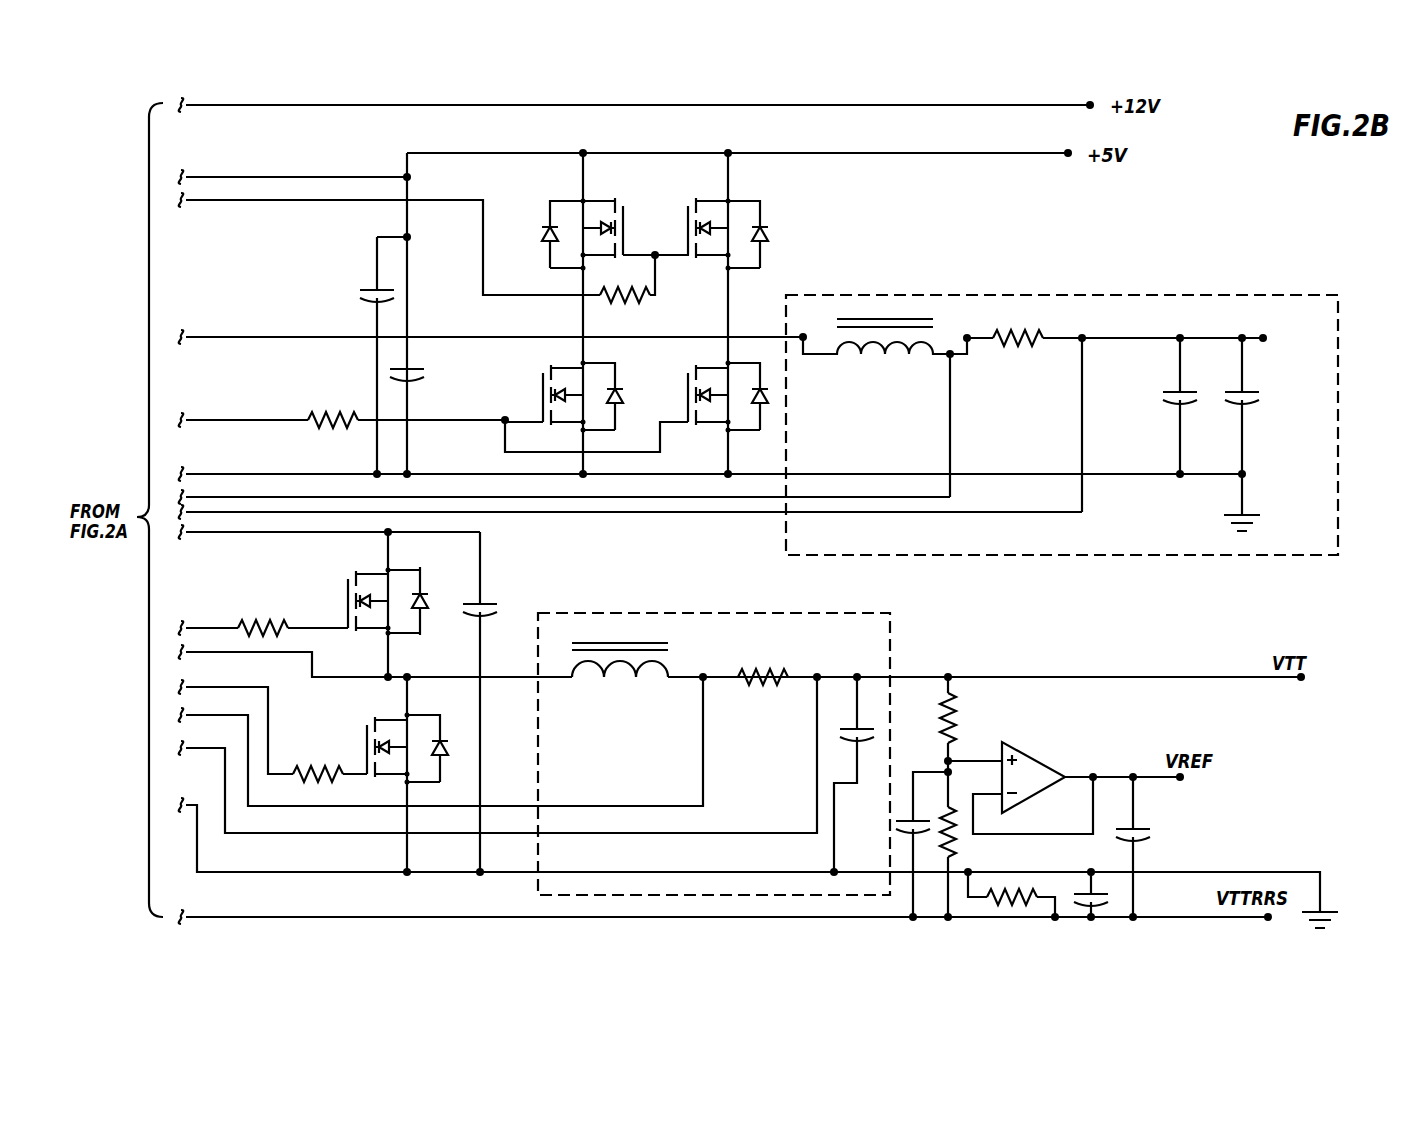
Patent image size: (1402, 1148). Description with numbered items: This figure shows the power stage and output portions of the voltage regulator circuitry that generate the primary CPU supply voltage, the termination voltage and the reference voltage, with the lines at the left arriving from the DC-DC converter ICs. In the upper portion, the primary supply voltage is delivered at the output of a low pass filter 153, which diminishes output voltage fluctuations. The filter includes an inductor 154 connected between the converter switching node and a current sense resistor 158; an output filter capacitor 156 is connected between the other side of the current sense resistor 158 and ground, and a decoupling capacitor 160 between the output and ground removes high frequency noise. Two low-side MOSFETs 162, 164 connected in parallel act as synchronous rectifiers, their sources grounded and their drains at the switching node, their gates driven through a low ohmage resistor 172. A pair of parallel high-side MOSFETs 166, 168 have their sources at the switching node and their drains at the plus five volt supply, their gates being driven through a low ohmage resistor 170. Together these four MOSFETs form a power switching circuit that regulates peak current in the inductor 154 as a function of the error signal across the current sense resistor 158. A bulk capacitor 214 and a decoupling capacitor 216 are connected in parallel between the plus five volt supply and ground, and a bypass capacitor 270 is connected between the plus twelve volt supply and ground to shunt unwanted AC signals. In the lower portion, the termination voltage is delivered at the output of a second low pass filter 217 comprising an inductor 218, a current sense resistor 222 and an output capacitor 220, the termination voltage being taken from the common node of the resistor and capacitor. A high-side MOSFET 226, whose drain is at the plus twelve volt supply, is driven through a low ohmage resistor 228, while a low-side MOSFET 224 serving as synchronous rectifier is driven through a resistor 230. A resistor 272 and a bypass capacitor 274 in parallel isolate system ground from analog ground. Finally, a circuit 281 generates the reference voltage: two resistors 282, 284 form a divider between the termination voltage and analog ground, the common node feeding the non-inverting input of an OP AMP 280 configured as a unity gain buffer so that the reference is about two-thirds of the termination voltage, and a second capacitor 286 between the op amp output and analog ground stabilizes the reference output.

The low pass filter 153 is at (1062, 400).
The inductor 154 is at (875, 318).
The output filter capacitor 156 is at (1170, 392).
The current sense resistor 158 is at (1011, 345).
The decoupling capacitor 160 is at (1250, 392).
The low-side MOSFET 162 is at (604, 363).
The low-side MOSFET 164 is at (772, 447).
The high-side MOSFET 166 is at (593, 201).
The high-side MOSFET 168 is at (763, 201).
The low ohmage resistor 170 is at (635, 301).
The low ohmage resistor 172 is at (337, 412).
The bulk capacitor 214 is at (373, 289).
The decoupling capacitor 216 is at (422, 369).
The low pass filter 217 is at (745, 751).
The inductor 218 is at (642, 643).
The output capacitor 220 is at (844, 740).
The current sense resistor 222 is at (766, 673).
The low-side MOSFET 224 is at (406, 718).
The high-side MOSFET 226 is at (400, 570).
The low ohmage resistor 228 is at (266, 619).
The resistor 230 is at (325, 767).
The bypass capacitor 270 is at (487, 605).
The resistor 272 is at (1021, 890).
The bypass capacitor 274 is at (1083, 892).
The OP AMP 280 is at (1040, 766).
The circuit 281 is at (980, 797).
The resistor 282 is at (945, 720).
The resistor 284 is at (945, 820).
The second capacitor 286 is at (905, 822).